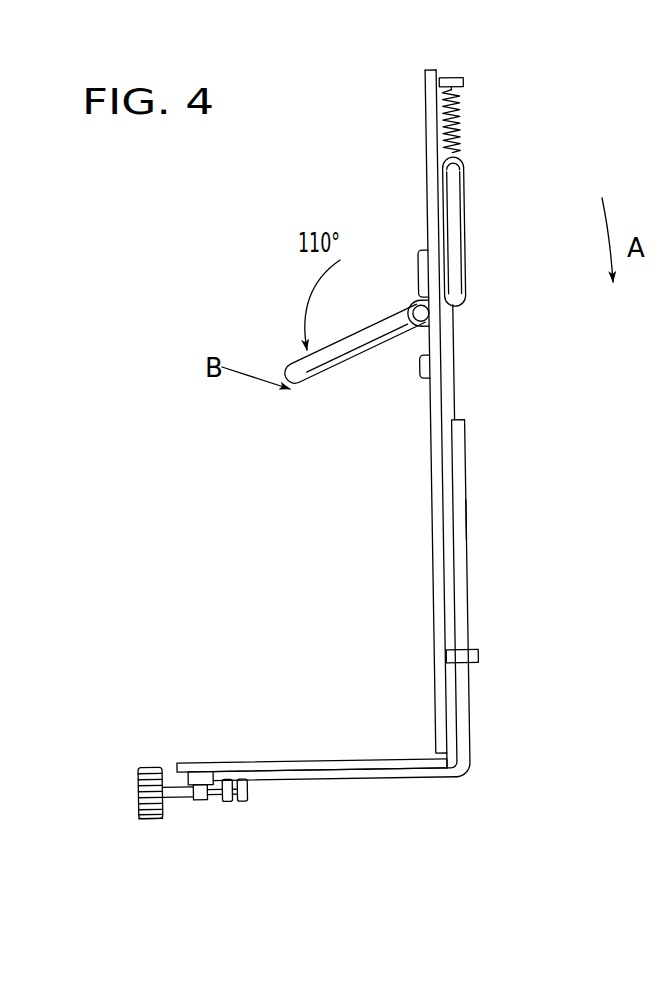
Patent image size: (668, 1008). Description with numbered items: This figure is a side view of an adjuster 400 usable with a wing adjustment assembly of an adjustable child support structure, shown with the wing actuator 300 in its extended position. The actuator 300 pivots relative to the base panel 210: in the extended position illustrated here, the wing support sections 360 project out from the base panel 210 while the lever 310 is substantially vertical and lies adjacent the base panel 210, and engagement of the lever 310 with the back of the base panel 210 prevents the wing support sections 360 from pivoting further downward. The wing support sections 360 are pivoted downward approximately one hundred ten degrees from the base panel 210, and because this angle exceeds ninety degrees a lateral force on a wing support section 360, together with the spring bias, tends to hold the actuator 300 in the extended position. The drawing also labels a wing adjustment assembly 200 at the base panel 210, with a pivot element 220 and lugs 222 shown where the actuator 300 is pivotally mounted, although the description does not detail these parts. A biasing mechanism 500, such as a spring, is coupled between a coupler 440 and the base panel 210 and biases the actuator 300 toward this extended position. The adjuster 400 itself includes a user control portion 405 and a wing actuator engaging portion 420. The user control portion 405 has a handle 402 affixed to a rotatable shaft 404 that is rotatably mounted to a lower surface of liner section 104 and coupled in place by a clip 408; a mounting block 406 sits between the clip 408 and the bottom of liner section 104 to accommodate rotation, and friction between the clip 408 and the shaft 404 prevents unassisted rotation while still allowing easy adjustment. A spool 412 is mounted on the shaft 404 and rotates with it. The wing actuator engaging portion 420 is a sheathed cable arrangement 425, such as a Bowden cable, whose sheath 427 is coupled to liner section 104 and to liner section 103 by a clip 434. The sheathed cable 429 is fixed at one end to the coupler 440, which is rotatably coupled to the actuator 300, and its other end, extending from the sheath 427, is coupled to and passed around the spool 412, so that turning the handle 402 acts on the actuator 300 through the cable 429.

The liner section 103 is at (432, 618).
The liner section 104 is at (300, 760).
The hinge assembly 200 is at (424, 180).
The base panel 210 is at (437, 70).
The pivot 220 is at (426, 378).
The lugs 222 is at (418, 267).
The actuator 300 is at (474, 274).
The lever 310 is at (459, 179).
The wing support sections 360 is at (321, 373).
The adjuster 400 is at (406, 798).
The handle 402 is at (140, 782).
The rotatable shaft 404 is at (178, 799).
The user control portion 405 is at (147, 822).
The mounting block 406 is at (200, 775).
The clip 408 is at (210, 797).
The spool 412 is at (247, 801).
The wing actuator engaging portion 420 is at (497, 518).
The sheathed cable arrangement 425 is at (367, 784).
The sheath 427 is at (465, 727).
The sheathed cable 429 is at (466, 377).
The clip 434 is at (477, 652).
The coupler 440 is at (463, 160).
The biasing mechanism 500 is at (470, 113).